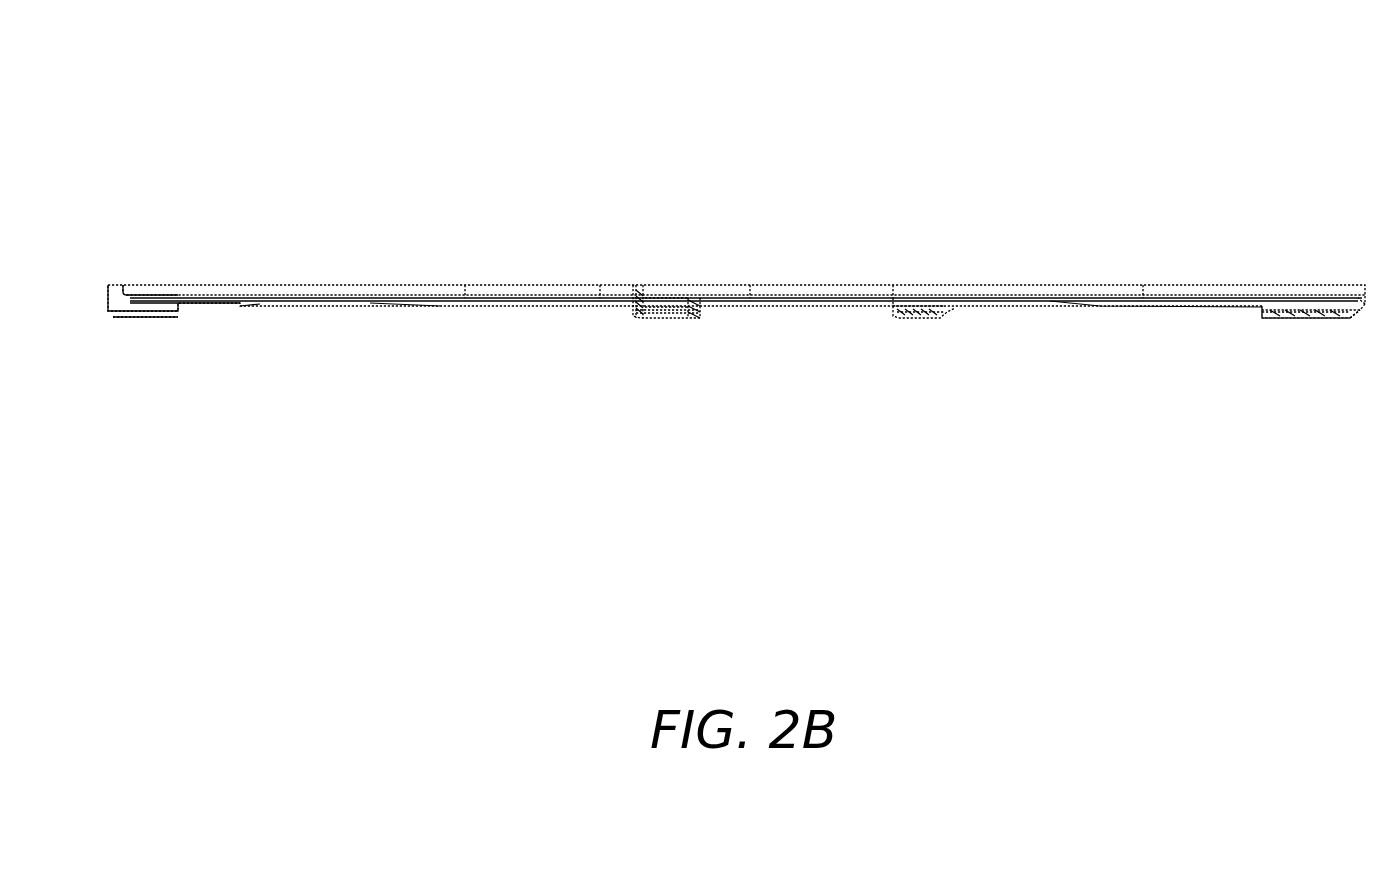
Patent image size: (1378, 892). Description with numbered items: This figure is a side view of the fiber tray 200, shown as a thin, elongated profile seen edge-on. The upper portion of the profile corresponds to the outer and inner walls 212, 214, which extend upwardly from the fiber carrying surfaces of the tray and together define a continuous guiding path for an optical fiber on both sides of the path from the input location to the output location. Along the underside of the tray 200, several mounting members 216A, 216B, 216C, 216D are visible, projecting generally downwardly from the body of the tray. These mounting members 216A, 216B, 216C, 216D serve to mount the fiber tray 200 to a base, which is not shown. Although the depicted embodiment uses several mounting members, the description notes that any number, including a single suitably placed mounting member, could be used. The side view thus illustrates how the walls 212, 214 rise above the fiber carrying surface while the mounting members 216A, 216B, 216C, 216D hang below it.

The fiber tray 200 is at (736, 223).
The outer wall 212 is at (736, 316).
The inner wall 214 is at (736, 350).
The mounting member 216A is at (150, 340).
The mounting member 216B is at (675, 342).
The mounting member 216C is at (1317, 338).
The mounting member 216D is at (931, 333).